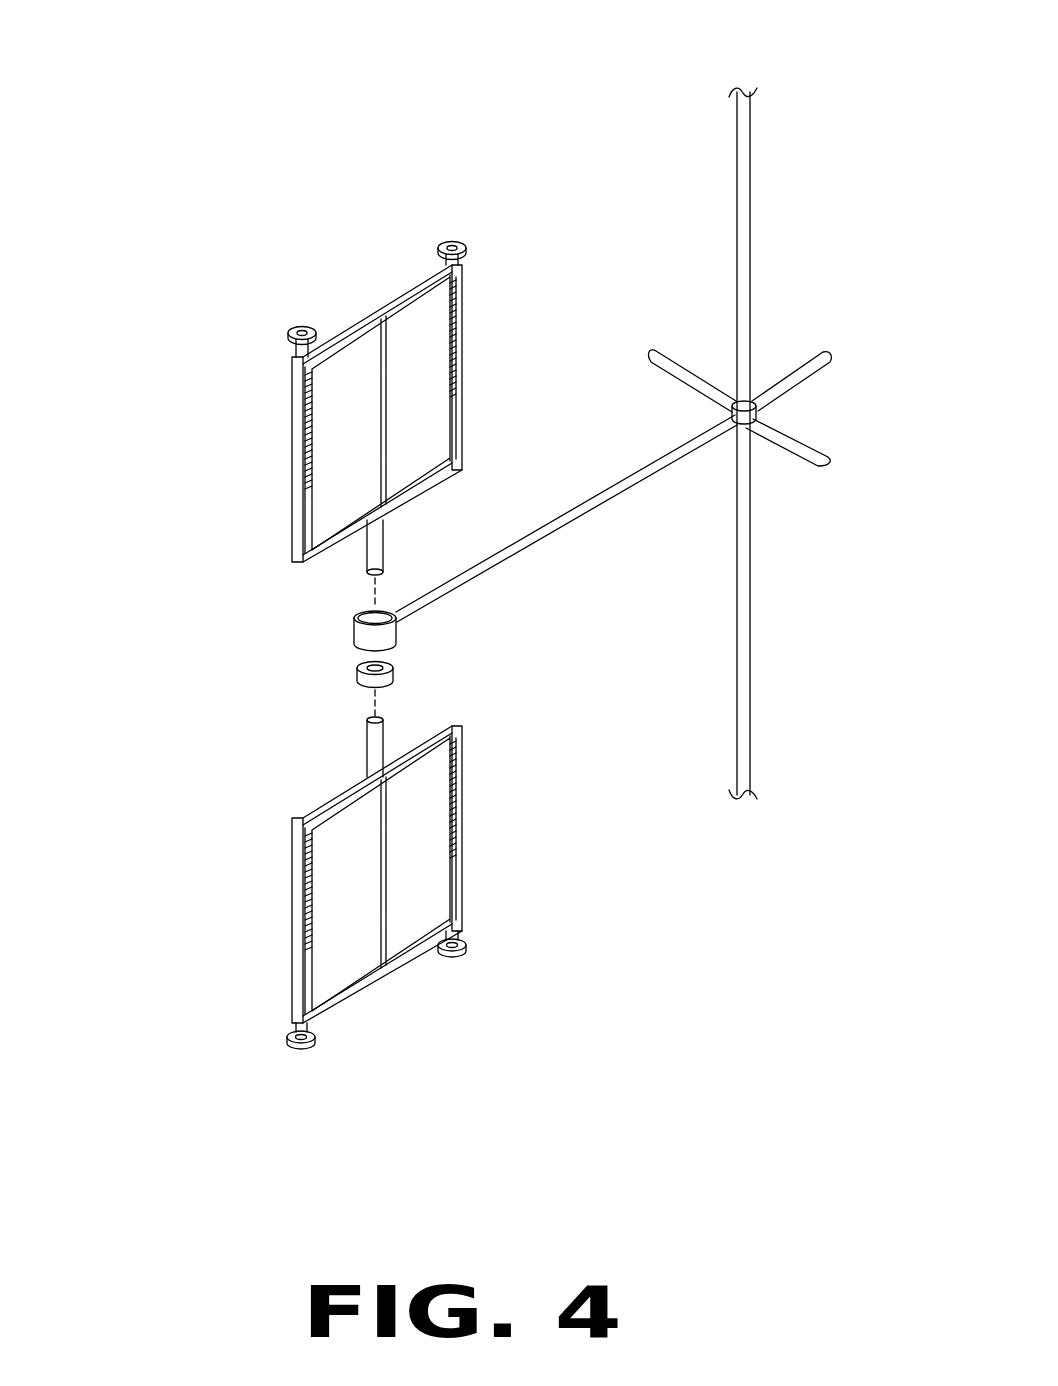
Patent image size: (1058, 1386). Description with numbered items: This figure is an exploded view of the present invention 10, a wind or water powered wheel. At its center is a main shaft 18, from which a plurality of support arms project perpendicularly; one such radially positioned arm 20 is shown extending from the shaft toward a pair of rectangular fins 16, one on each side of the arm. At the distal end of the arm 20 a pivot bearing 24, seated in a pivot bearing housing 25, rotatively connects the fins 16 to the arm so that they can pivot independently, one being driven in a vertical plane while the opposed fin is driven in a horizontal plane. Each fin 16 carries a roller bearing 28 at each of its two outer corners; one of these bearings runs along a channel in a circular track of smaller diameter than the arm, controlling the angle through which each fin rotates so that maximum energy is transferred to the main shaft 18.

The present invention 10 is at (836, 104).
The rectangular fin 16 is at (475, 649).
The main shaft 18 is at (748, 601).
The arm 20 is at (558, 522).
The pivot bearing 24 is at (355, 678).
The pivot bearing housing 25 is at (352, 629).
The roller bearing 28 is at (466, 949).